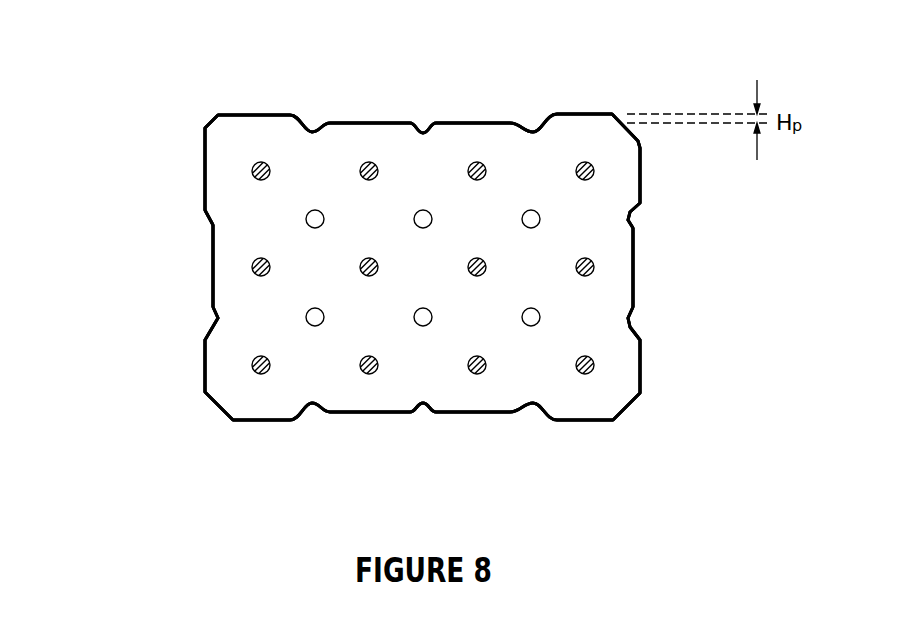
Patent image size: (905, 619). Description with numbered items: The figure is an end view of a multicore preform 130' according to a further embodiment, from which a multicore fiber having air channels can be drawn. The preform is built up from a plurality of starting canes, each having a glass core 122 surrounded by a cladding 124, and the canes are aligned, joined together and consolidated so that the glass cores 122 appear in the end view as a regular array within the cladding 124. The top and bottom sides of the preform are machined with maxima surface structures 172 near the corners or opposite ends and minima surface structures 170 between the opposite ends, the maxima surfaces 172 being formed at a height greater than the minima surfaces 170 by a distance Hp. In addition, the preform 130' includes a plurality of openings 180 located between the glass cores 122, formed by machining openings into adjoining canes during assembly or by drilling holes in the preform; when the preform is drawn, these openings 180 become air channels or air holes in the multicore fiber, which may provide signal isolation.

The multicore preform 130' is at (335, 225).
The cladding 124 is at (237, 215).
The maxima surface structures 172 is at (254, 113).
The minima surface structures 170 is at (475, 122).
The glass core 122 is at (263, 164).
The openings 180 is at (313, 212).